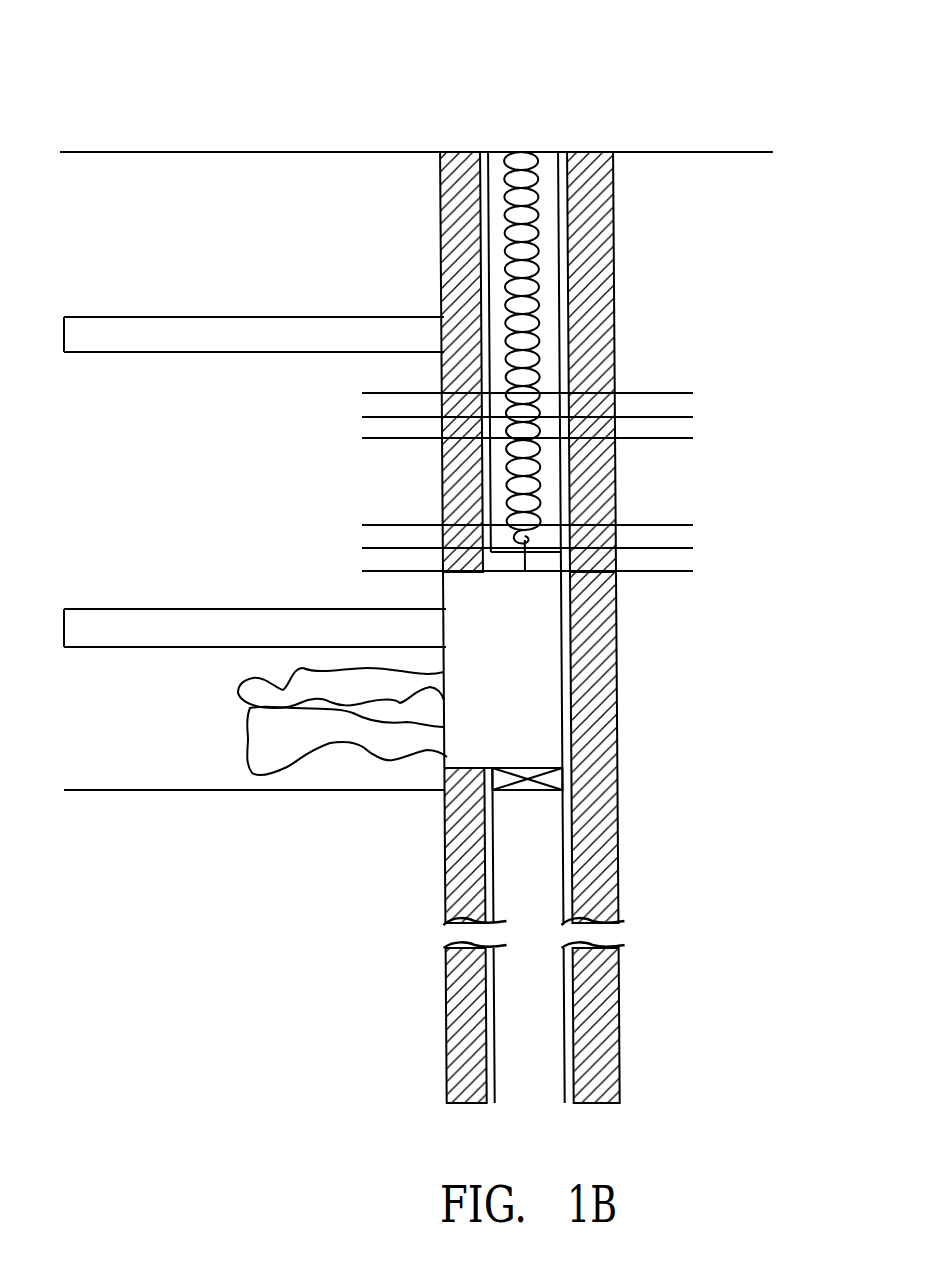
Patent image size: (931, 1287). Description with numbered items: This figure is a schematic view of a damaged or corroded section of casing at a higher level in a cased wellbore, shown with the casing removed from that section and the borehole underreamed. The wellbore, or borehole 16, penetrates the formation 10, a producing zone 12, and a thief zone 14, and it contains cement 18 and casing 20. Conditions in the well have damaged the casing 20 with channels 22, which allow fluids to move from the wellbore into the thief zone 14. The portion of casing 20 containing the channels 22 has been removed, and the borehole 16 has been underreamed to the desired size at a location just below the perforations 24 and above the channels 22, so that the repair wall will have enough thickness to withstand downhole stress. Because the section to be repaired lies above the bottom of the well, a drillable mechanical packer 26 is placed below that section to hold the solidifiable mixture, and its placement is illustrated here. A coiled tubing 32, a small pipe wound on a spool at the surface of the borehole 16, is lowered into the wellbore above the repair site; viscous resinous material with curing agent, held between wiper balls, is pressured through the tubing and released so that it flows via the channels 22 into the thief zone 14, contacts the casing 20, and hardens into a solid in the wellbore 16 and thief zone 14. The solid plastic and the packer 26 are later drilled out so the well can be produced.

The formation 10 is at (180, 245).
The producing zone 12 is at (180, 485).
The thief zone 14 is at (180, 723).
The borehole 16 is at (614, 195).
The cement 18 is at (462, 150).
The casing 20 is at (571, 700).
The channels 22 is at (445, 757).
The perforations 24 is at (678, 393).
The drillable mechanical packer 26 is at (510, 790).
The coiled tubing 32 is at (773, 97).